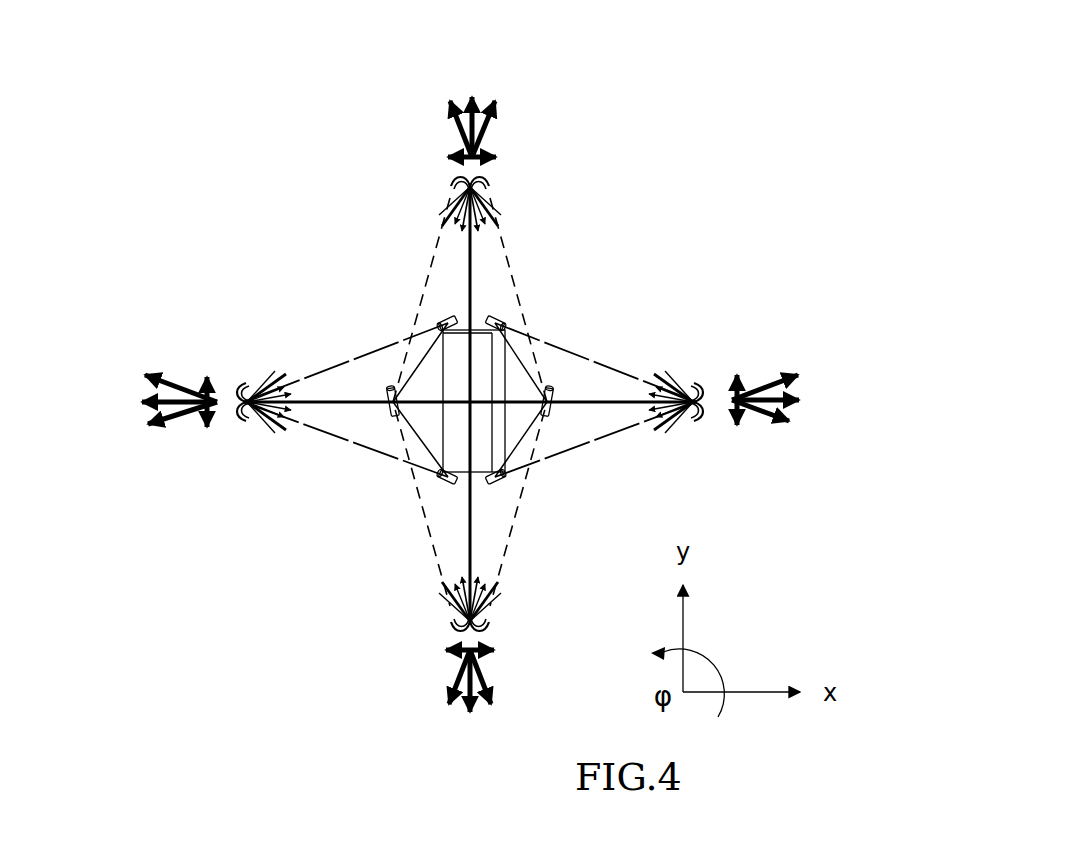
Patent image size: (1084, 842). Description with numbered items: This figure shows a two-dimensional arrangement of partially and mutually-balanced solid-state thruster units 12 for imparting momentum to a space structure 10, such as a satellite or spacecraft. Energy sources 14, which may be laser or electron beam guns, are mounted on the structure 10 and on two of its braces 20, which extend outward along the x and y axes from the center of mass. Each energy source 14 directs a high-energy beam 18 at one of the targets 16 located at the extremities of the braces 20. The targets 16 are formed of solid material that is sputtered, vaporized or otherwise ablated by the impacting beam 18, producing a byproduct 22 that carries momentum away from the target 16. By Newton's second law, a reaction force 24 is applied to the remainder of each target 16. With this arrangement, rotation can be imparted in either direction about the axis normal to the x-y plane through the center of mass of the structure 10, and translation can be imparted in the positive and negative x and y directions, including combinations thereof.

The space structure 10 is at (445, 360).
The thruster unit 12 is at (550, 308).
The energy source 14 is at (443, 323).
The target 16 is at (448, 182).
The energy beam 18 is at (430, 278).
The brace 20 is at (315, 402).
The byproduct 22 is at (497, 203).
The reaction force 24 is at (150, 425).